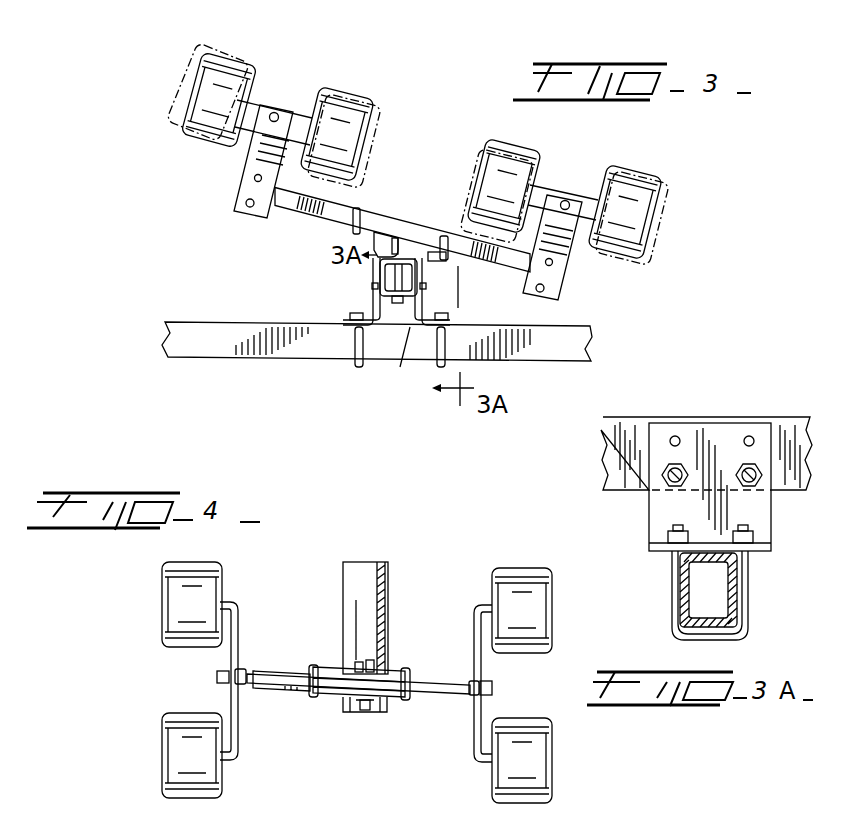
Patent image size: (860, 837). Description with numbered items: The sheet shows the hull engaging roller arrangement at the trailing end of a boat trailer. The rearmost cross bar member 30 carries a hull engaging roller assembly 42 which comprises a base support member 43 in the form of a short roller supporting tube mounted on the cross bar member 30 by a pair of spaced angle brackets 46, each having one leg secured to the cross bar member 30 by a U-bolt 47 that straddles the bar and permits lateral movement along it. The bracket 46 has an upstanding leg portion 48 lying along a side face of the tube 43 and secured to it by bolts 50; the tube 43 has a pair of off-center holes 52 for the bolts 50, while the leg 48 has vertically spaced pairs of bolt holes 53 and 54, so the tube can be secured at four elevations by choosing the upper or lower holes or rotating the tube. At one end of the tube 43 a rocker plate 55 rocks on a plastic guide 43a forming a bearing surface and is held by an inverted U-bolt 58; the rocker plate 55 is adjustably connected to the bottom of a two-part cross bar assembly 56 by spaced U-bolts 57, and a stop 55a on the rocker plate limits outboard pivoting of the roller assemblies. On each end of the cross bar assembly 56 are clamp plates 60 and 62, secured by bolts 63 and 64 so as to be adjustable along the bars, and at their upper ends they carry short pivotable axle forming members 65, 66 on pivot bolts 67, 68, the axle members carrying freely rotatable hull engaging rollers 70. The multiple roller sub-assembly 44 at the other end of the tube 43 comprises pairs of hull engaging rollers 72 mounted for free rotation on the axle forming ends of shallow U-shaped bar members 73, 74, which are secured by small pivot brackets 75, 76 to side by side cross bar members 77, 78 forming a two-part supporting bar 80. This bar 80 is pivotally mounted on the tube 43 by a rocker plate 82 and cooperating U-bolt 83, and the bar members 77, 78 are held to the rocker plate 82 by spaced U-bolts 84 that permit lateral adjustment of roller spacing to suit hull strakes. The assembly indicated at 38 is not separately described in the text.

In FIG. 3, the rearmost cross bar member 30 is at (548, 352).
In FIG. 3A, the rearmost cross bar member 30 is at (693, 598).
In FIG. 3, the wheel mounting plate assembly 38 is at (247, 224).
In FIG. 3, the hull engaging roller assembly 42 is at (497, 136).
In FIG. 3, the base support member 43 is at (394, 368).
In FIG. 3A, the base support member 43 is at (635, 470).
In FIG. 4, the base support member 43 is at (388, 577).
In FIG. 3, the guide 43a is at (372, 252).
In FIG. 4, the guide 43a is at (347, 712).
In FIG. 4, the hull engaging roller sub-assembly 44 is at (145, 638).
In FIG. 3, the angle bracket 46 is at (364, 302).
In FIG. 3A, the angle bracket 46 is at (766, 510).
In FIG. 3, the U-bolt 47 is at (354, 356).
In FIG. 3A, the U-bolt 47 is at (742, 609).
In FIG. 3A, the upstanding leg portion 48 is at (667, 505).
In FIG. 3, the bolt 50 is at (370, 286).
In FIG. 3A, the bolt 50 is at (663, 470).
In FIG. 3A, the hole 52 is at (745, 476).
In FIG. 3A, the bolt hole 53 is at (684, 466).
In FIG. 3A, the bolt hole 54 is at (748, 436).
In FIG. 3, the rocker plate 55 is at (352, 233).
In FIG. 3, the stop 55a is at (378, 234).
In FIG. 3, the two-part cross bar assembly 56 is at (284, 218).
In FIG. 3, the U-bolt 57 is at (360, 210).
In FIG. 3, the U-bolt 58 is at (384, 278).
In FIG. 3, the clamp plate 60 is at (240, 184).
In FIG. 3, the clamp plate 62 is at (556, 278).
In FIG. 3, the bolt 63 is at (254, 177).
In FIG. 3, the bolt 64 is at (246, 204).
In FIG. 3, the pivotable axle forming member 65 is at (301, 104).
In FIG. 3, the pivotable axle forming member 66 is at (587, 196).
In FIG. 3, the pivot bolt 67 is at (270, 121).
In FIG. 3, the pivot bolt 68 is at (552, 264).
In FIG. 3, the hull engaging roller 70 is at (230, 62).
In FIG. 4, the wheel 72 is at (163, 713).
In FIG. 4, the U-shaped bar member 73 is at (473, 728).
In FIG. 4, the U-shaped bar member 74 is at (238, 637).
In FIG. 4, the pivot bracket 75 is at (473, 684).
In FIG. 4, the pivot bracket 76 is at (238, 685).
In FIG. 4, the cross bar member 77 is at (280, 672).
In FIG. 4, the cross bar member 78 is at (278, 693).
In FIG. 4, the two-part supporting bar 80 is at (420, 698).
In FIG. 4, the rocker plate 82 is at (390, 710).
In FIG. 4, the U-bolt 83 is at (384, 660).
In FIG. 4, the U-bolt 84 is at (408, 668).